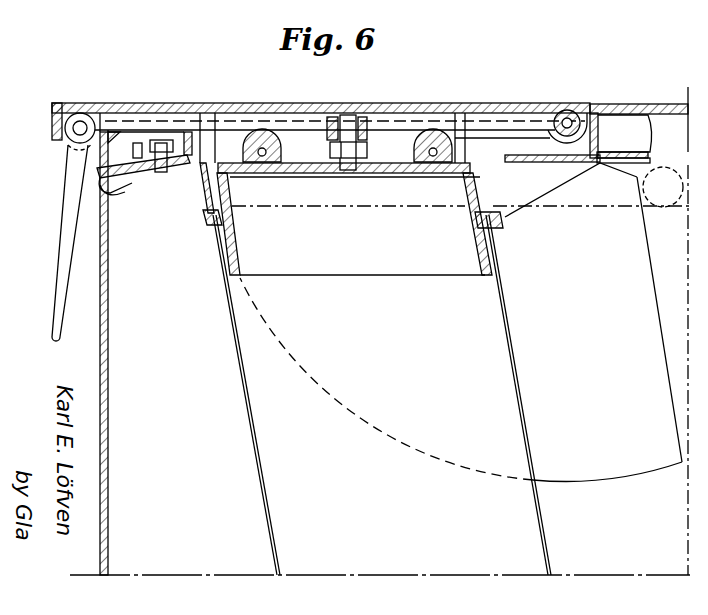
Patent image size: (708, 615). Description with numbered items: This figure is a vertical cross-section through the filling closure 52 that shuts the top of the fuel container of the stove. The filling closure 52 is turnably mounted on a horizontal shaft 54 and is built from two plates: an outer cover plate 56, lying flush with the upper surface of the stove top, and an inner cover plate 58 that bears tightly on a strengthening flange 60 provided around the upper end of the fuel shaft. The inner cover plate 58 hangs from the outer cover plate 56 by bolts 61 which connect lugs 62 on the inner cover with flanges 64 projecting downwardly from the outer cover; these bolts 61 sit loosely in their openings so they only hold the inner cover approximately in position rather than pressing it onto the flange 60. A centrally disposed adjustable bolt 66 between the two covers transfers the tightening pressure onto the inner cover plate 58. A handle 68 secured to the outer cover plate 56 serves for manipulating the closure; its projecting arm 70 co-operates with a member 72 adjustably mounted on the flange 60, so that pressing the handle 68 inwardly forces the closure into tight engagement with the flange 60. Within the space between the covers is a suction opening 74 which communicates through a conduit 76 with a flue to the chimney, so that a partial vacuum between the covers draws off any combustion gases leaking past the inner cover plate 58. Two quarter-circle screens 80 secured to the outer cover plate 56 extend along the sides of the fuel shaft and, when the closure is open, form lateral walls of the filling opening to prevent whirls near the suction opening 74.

The filling closure 52 is at (227, 108).
The horizontal shaft 54 is at (569, 117).
The outer cover plate 56 is at (445, 112).
The inner cover plate 58 is at (430, 173).
The strengthening flange 60 is at (233, 233).
The bolts 61 is at (255, 147).
The lugs 62 is at (272, 153).
The flanges 64 is at (463, 150).
The adjustable bolt 66 is at (348, 168).
The handle 68 is at (60, 262).
The projecting arm 70 is at (115, 191).
The member 72 is at (133, 179).
The suction opening 74 is at (528, 199).
The conduit 76 is at (664, 204).
The screens 80 is at (600, 480).